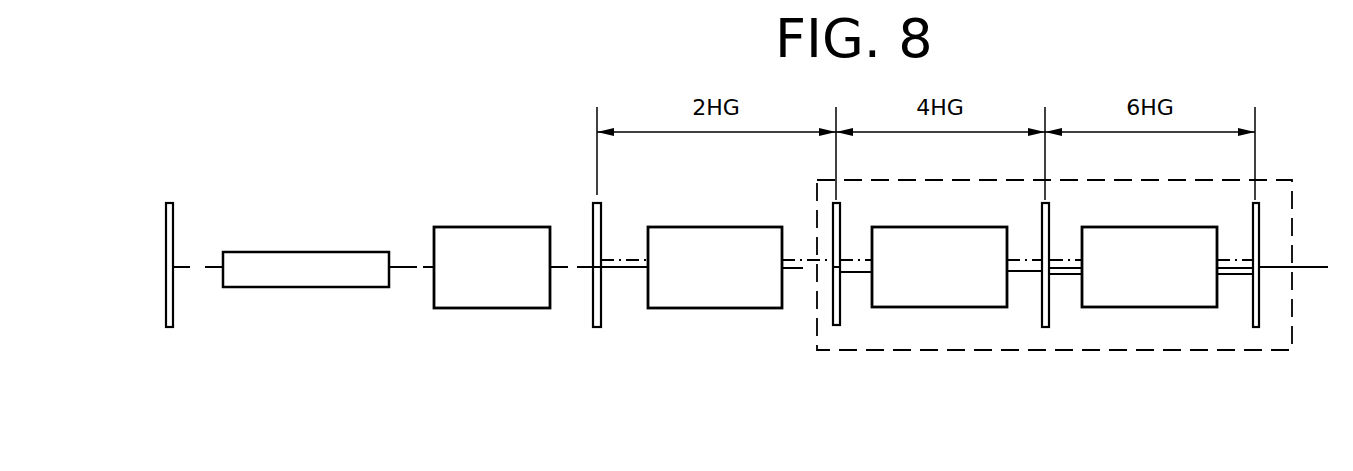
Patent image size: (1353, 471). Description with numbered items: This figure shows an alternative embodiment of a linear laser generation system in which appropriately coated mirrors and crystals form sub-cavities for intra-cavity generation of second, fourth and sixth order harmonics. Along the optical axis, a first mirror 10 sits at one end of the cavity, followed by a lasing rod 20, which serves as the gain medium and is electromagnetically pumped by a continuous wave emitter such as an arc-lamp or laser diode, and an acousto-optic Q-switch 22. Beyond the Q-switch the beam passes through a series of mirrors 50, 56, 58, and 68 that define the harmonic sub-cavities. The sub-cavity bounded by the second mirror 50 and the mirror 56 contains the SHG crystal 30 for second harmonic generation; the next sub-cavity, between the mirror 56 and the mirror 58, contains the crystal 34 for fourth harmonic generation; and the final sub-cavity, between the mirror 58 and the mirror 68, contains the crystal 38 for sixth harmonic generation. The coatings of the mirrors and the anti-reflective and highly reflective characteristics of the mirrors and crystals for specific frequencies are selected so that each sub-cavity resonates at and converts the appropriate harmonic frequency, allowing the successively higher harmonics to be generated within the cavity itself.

The first mirror 10 is at (173, 222).
The lasing rod 20 is at (329, 254).
The acousto-optic Q-switch 22 is at (457, 232).
The second mirror 50 is at (601, 222).
The SHG crystal 30 is at (752, 228).
The mirror 56 is at (841, 212).
The crystal 34 is at (955, 306).
The mirror 58 is at (1050, 218).
The crystal 38 is at (1170, 305).
The mirror 68 is at (1253, 225).